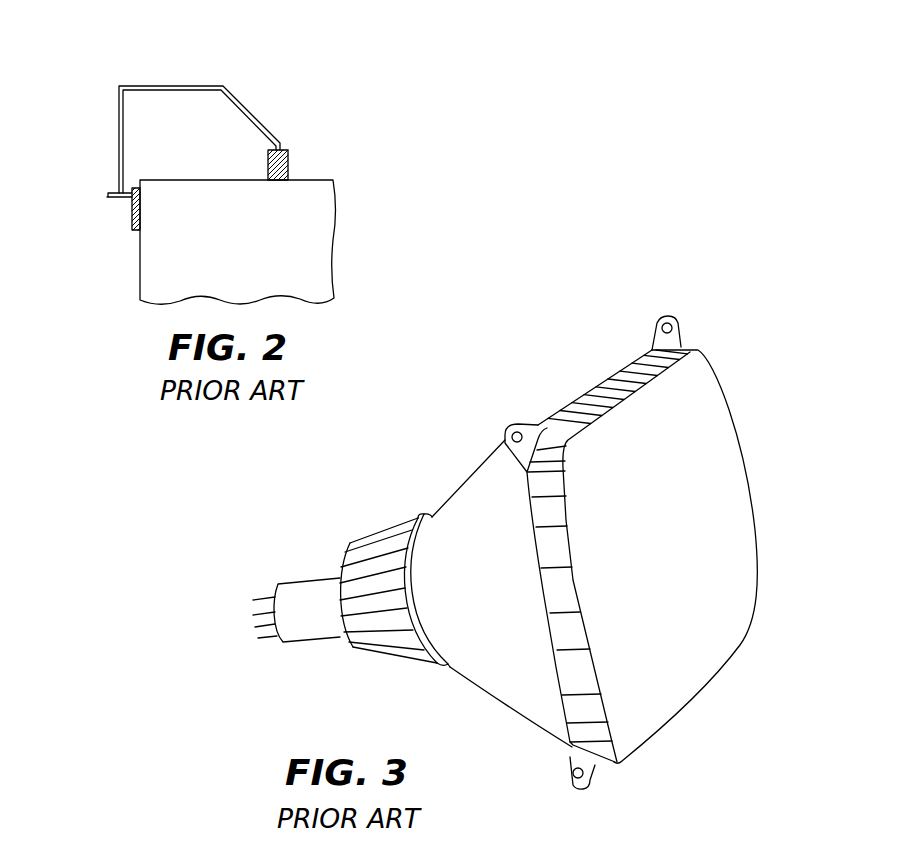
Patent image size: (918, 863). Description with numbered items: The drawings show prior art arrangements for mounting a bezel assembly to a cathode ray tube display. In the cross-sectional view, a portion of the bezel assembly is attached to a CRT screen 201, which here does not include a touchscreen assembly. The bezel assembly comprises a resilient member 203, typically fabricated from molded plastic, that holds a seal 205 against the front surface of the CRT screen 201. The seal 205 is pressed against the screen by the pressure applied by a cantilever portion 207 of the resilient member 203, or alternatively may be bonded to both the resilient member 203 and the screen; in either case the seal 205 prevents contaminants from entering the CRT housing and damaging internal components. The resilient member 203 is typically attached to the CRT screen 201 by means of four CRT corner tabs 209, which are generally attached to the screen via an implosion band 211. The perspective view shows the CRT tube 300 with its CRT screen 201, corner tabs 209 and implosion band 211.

In FIG. 2, the CRT screen 201 is at (250, 251).
In FIG. 3, the CRT screen 201 is at (684, 550).
In FIG. 2, the resilient member 203 is at (205, 60).
In FIG. 2, the seal 205 is at (289, 163).
In FIG. 2, the cantilever portion 207 is at (257, 118).
In FIG. 2, the CRT corner tabs 209 is at (112, 198).
In FIG. 3, the CRT corner tabs 209 is at (677, 326).
In FIG. 2, the implosion band 211 is at (131, 221).
In FIG. 3, the implosion band 211 is at (608, 402).
In FIG. 3, the CRT tube 300 is at (515, 345).